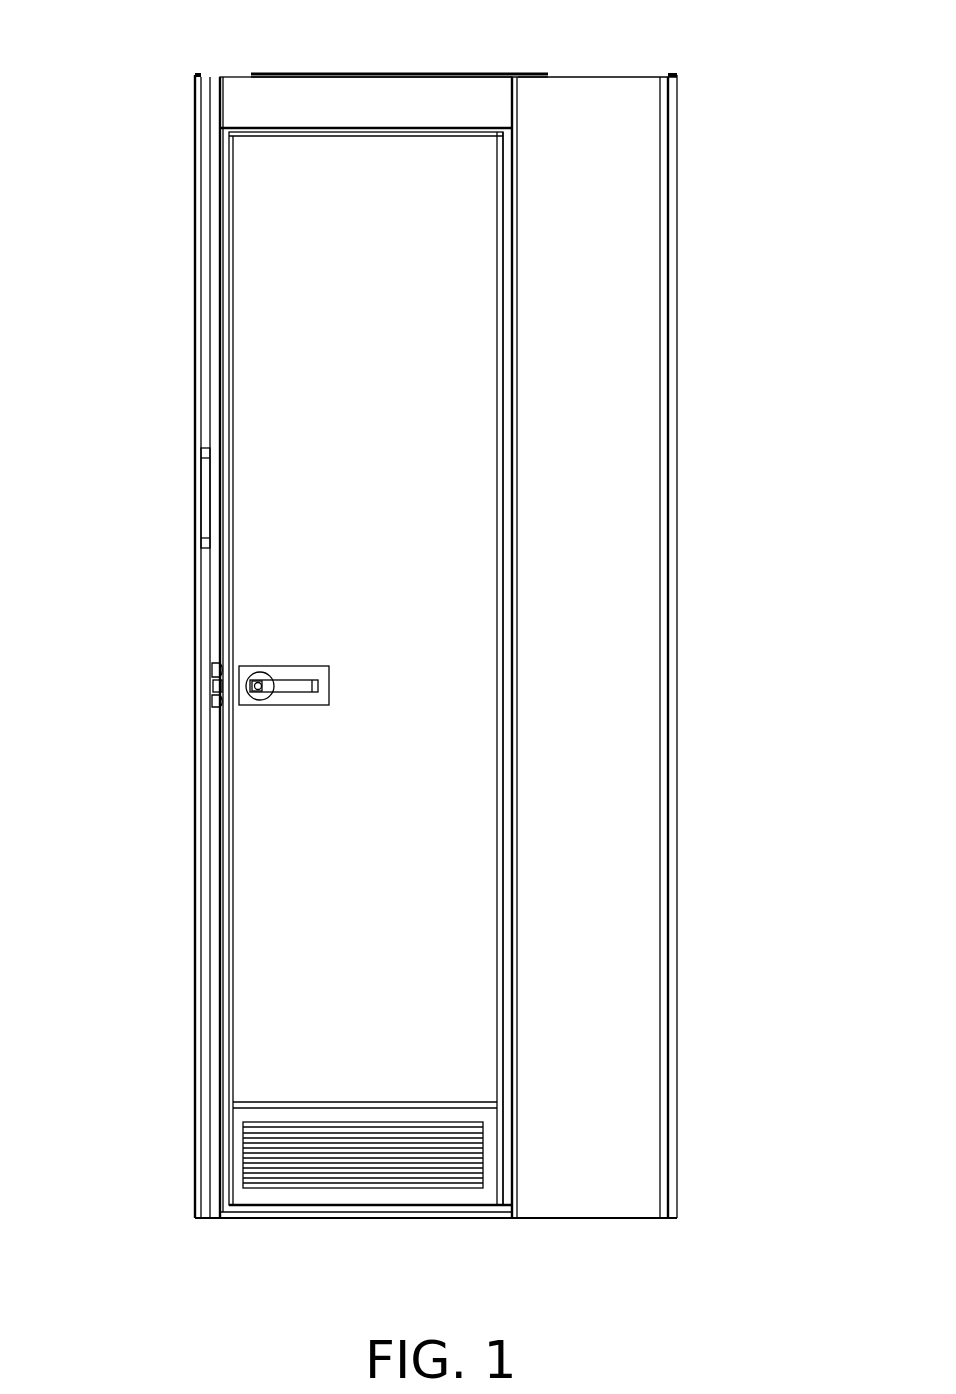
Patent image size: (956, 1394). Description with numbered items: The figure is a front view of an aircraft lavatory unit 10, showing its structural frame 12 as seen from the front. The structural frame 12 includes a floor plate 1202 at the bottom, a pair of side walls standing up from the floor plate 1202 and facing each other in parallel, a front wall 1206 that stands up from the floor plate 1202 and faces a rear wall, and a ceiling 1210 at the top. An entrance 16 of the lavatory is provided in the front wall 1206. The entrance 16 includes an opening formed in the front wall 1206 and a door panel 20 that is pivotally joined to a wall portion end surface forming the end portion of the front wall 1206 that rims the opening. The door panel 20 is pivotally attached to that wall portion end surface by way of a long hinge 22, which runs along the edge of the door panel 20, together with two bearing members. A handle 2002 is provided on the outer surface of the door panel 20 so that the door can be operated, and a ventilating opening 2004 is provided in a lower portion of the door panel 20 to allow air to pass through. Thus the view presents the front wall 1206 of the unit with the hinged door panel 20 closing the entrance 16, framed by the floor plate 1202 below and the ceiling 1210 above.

The aircraft lavatory unit 10 is at (360, 60).
The structural frame 12 is at (235, 72).
The entrance 16 is at (188, 330).
The door panel 20 is at (272, 220).
The long hinge 22 is at (516, 370).
The floor plate 1202 is at (455, 1221).
The front wall 1206 is at (610, 530).
The ceiling 1210 is at (458, 72).
The handle 2002 is at (290, 680).
The ventilating opening 2004 is at (308, 1155).